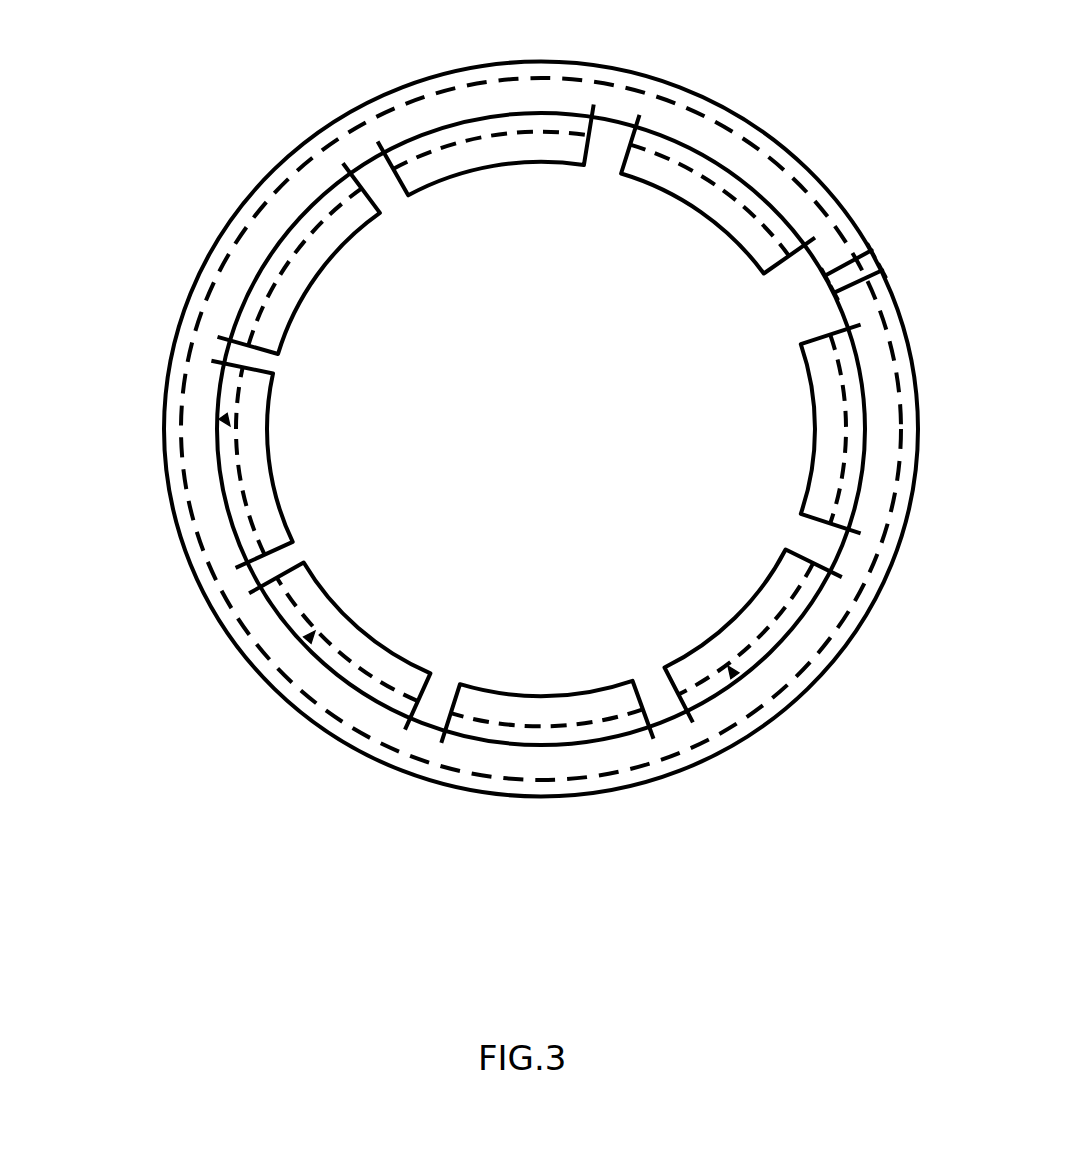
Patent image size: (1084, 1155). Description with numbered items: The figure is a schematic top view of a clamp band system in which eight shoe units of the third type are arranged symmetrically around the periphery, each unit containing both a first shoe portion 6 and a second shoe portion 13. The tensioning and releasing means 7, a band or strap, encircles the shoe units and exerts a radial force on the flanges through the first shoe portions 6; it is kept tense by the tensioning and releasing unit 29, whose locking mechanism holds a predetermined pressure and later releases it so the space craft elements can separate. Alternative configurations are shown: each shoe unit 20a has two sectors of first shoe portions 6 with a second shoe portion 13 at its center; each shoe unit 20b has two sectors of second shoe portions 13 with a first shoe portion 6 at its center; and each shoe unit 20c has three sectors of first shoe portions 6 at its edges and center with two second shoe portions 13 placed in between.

The tensioning and releasing means 7 is at (733, 141).
The tensioning and releasing unit 29 is at (865, 262).
The first shoe portion 6 is at (258, 407).
The second shoe portion 13 is at (258, 470).
The shoe unit 20a is at (230, 426).
The shoe unit 20b is at (315, 631).
The shoe unit 20c is at (728, 666).